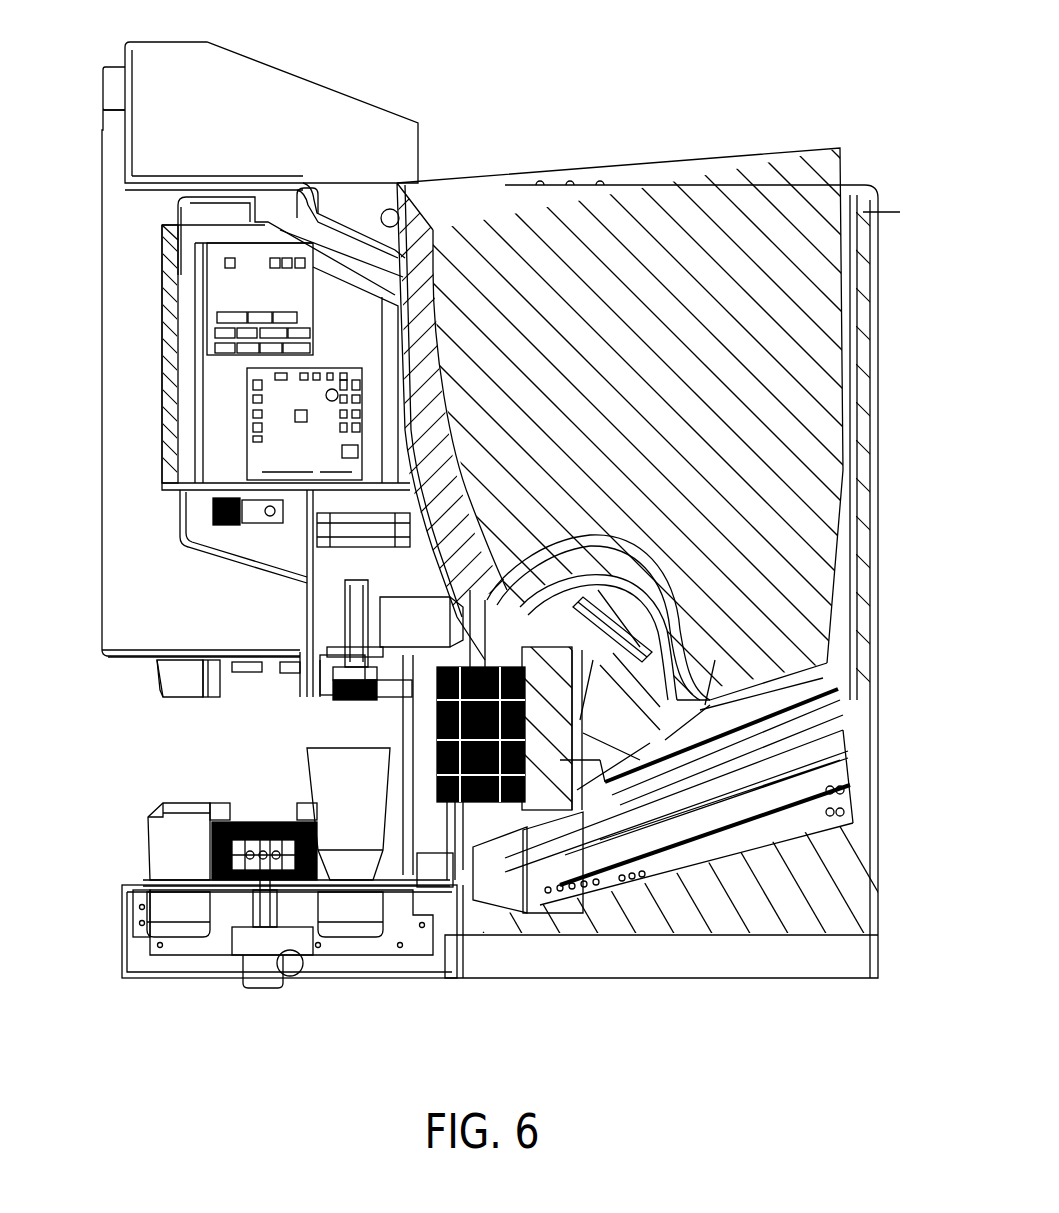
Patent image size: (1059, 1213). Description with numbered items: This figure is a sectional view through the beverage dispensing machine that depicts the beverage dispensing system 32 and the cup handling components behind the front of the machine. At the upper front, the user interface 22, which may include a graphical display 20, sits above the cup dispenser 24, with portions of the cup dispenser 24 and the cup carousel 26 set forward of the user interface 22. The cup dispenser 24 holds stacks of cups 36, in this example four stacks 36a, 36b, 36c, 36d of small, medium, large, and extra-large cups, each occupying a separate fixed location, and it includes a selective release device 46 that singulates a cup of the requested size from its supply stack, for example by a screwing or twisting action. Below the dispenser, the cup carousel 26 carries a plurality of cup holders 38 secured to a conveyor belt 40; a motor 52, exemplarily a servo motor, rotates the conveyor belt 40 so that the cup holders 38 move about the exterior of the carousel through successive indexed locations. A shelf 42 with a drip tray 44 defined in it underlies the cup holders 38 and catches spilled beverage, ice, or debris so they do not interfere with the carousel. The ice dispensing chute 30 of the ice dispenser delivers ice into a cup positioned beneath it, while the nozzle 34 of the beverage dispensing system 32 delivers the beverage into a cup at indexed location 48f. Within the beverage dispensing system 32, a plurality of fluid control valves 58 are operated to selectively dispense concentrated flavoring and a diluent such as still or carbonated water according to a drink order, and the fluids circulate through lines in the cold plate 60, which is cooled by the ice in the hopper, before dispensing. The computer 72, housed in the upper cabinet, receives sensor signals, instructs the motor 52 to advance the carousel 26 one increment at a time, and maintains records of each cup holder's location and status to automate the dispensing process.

The graphical display 20 is at (140, 418).
The user interface 22 is at (163, 337).
The cup dispenser 24 is at (88, 330).
The cup carousel 26 is at (165, 778).
The ice dispensing chute 30 is at (322, 703).
The beverage dispensing system 32 is at (504, 636).
The nozzle 34 is at (400, 648).
The cups 36 is at (307, 760).
The stack of small cups 36a is at (157, 674).
The stack of medium cups 36b is at (207, 690).
The stack of large cups 36c is at (305, 660).
The stack of extra-large cups 36d is at (313, 673).
The cup holders 38 is at (157, 833).
The conveyor belt 40 is at (240, 827).
The shelf 42 is at (150, 887).
The drip tray 44 is at (178, 893).
The selective release device 46 is at (303, 580).
The indexed location 48f is at (347, 800).
The motor 52 is at (298, 966).
The fluid control valves 58 is at (640, 652).
The cold plate 60 is at (733, 773).
The computer 72 is at (327, 373).